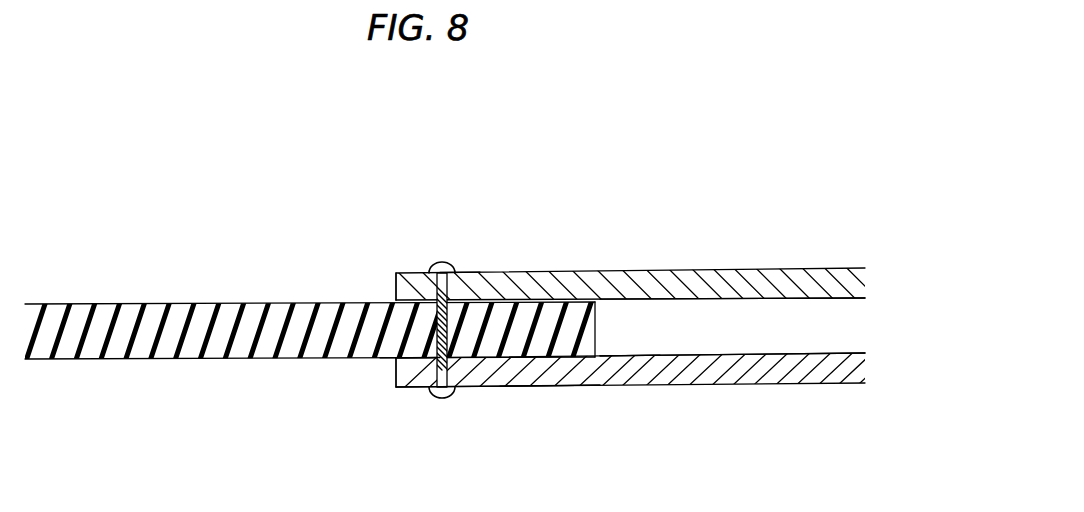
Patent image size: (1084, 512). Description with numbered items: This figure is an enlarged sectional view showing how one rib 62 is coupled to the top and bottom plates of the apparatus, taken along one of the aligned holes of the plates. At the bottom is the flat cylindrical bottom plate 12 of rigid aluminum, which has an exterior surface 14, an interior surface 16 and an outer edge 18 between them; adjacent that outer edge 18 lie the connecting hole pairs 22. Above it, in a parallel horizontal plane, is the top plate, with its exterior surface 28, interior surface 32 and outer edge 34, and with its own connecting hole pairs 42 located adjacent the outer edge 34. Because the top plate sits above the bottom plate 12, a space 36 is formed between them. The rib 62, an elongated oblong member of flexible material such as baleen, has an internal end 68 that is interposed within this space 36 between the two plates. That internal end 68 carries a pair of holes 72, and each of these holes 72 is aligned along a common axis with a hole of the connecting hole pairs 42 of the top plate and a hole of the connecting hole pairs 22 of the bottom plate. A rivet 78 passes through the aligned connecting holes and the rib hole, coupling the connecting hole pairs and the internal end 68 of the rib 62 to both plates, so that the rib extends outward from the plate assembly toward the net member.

The bottom plate 12 is at (722, 377).
The exterior surface 14 is at (462, 386).
The interior surface 16 is at (722, 354).
The outer edge 18 is at (397, 370).
The connecting hole pairs 22 is at (428, 388).
The exterior surface 28 is at (560, 272).
The interior surface 32 is at (705, 300).
The outer edge 34 is at (396, 283).
The space 36 is at (627, 335).
The connecting hole pairs 42 is at (470, 272).
The rib 62 is at (158, 305).
The internal end 68 is at (537, 387).
The pair of holes 72 is at (432, 328).
The rivet 78 is at (438, 262).